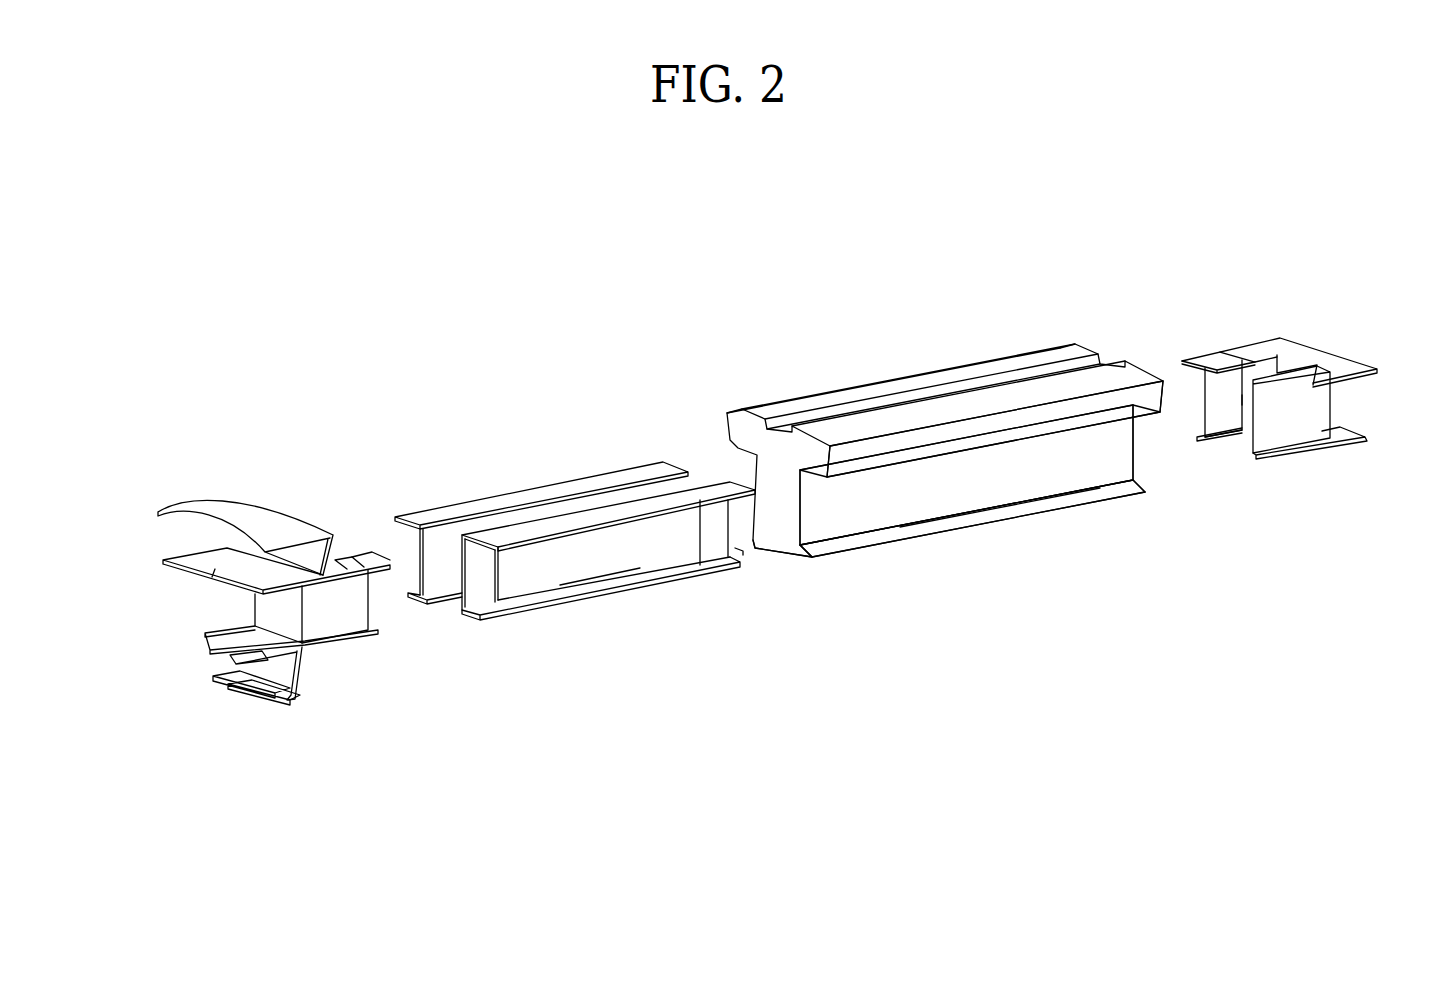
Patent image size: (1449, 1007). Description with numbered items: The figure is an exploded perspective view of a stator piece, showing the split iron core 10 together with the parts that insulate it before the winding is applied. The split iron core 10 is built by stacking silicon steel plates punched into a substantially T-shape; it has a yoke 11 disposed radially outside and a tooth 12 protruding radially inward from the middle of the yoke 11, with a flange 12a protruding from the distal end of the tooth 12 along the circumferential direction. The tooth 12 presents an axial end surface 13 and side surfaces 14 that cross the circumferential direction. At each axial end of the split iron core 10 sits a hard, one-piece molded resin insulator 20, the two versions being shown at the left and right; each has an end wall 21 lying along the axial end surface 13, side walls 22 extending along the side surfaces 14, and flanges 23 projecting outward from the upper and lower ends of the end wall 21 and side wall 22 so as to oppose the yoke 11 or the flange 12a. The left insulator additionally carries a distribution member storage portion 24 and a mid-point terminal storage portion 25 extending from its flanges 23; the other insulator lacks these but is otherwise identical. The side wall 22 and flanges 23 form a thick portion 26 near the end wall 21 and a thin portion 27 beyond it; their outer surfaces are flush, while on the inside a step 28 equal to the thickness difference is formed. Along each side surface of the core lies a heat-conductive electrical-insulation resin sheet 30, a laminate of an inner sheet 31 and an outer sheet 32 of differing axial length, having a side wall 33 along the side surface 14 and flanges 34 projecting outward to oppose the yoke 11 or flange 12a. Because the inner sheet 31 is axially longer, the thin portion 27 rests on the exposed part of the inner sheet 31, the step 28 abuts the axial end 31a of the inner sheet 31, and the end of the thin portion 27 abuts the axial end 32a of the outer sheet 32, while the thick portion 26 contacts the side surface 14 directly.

The split iron core 10 is at (935, 362).
The yoke 11 is at (1127, 368).
The tooth 12 is at (903, 512).
The flange 12a is at (1088, 505).
The axial end surface 13 is at (778, 540).
The side surface 14 is at (1005, 490).
The insulator 20 is at (314, 413).
The end wall 21 is at (258, 610).
The side wall 22 is at (343, 617).
The flange 23 is at (193, 558).
The distribution member storage portion 24 is at (307, 557).
The mid-point terminal storage portion 25 is at (267, 675).
The thick portion 26 is at (318, 633).
The thin portion 27 is at (363, 562).
The step 28 is at (348, 560).
The heat-conductive electrical-insulation resin sheet 30 is at (545, 480).
The inner sheet 31 is at (470, 617).
The axial end of inner sheet 31a is at (458, 557).
The outer sheet 32 is at (647, 563).
The axial end of outer sheet 32a is at (490, 583).
The side wall 33 is at (595, 572).
The flange 34 is at (715, 492).